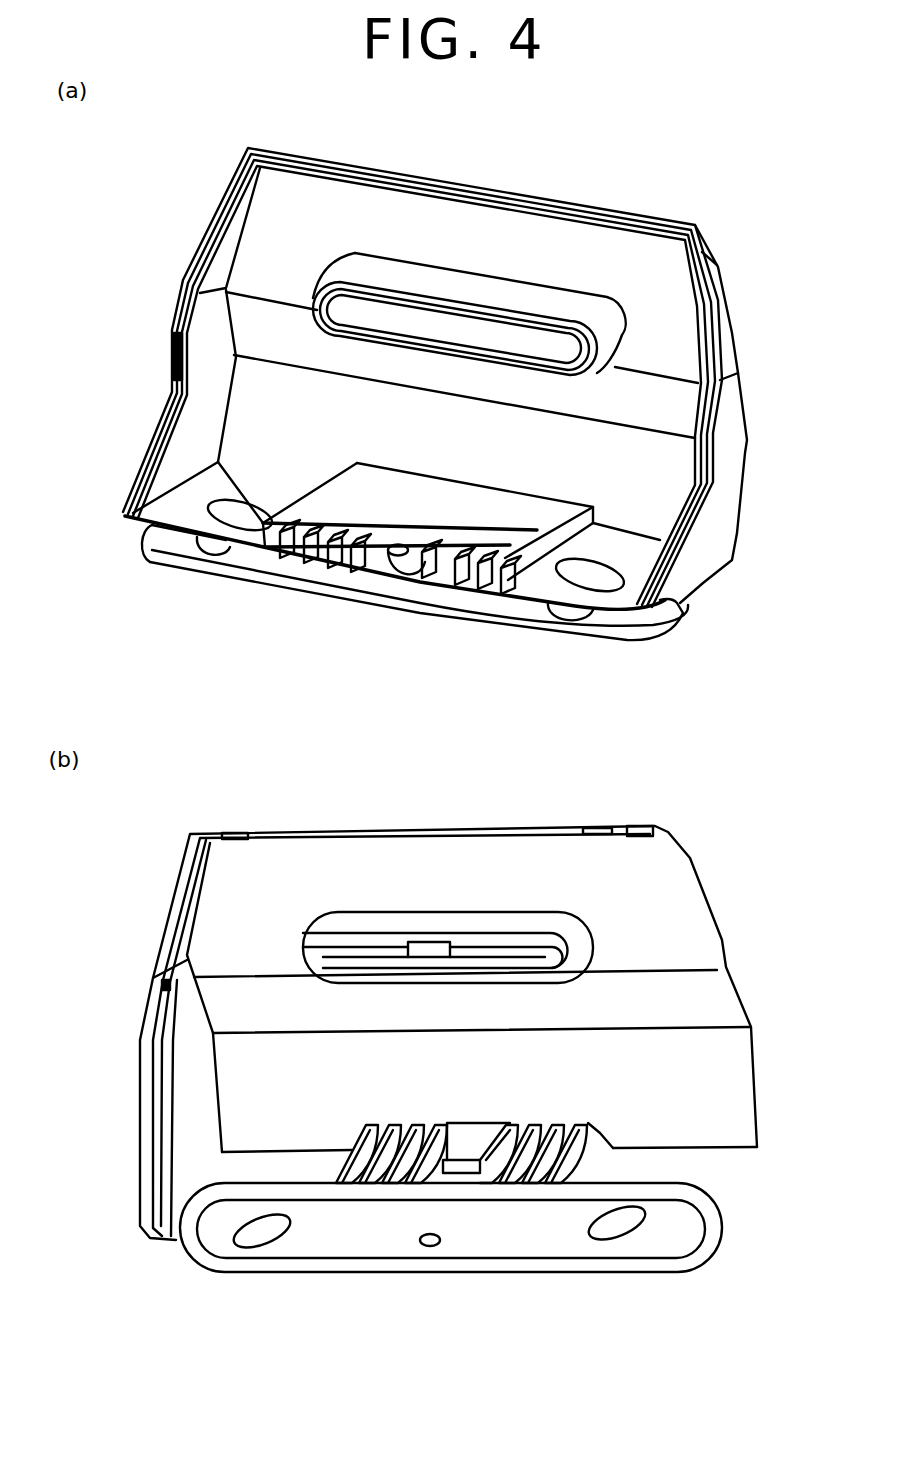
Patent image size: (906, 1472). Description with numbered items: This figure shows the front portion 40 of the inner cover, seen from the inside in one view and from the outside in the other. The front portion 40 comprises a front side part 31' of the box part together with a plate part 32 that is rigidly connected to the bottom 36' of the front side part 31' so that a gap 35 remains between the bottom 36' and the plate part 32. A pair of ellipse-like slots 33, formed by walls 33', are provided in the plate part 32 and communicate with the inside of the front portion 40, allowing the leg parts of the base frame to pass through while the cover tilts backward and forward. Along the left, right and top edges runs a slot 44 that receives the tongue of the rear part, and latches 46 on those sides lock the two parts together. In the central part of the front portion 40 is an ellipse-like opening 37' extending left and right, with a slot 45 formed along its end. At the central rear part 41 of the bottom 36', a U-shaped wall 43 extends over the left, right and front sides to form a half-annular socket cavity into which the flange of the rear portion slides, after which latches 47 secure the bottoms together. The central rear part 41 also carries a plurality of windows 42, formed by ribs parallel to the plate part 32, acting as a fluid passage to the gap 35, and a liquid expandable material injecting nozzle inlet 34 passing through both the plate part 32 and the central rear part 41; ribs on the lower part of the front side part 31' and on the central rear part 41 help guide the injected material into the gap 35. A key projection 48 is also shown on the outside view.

The front portion 40 is at (158, 192).
The front side part 31' is at (399, 660).
The plate part 32 is at (653, 630).
The slots 33 is at (390, 916).
The walls 33' is at (364, 621).
The liquid expandable material injecting nozzle inlet 34 is at (392, 570).
The gap 35 is at (170, 533).
The bottom of the front side part 36' is at (434, 806).
The ellipse like opening 37' is at (450, 548).
The central rear part 41 is at (360, 525).
The windows 42 is at (440, 590).
The U-shaped wall 43 is at (532, 597).
The slot 44 is at (405, 176).
The slot 45 is at (358, 250).
The latches 46 is at (302, 148).
The latches 47 is at (457, 1170).
The key projection 48 is at (440, 940).